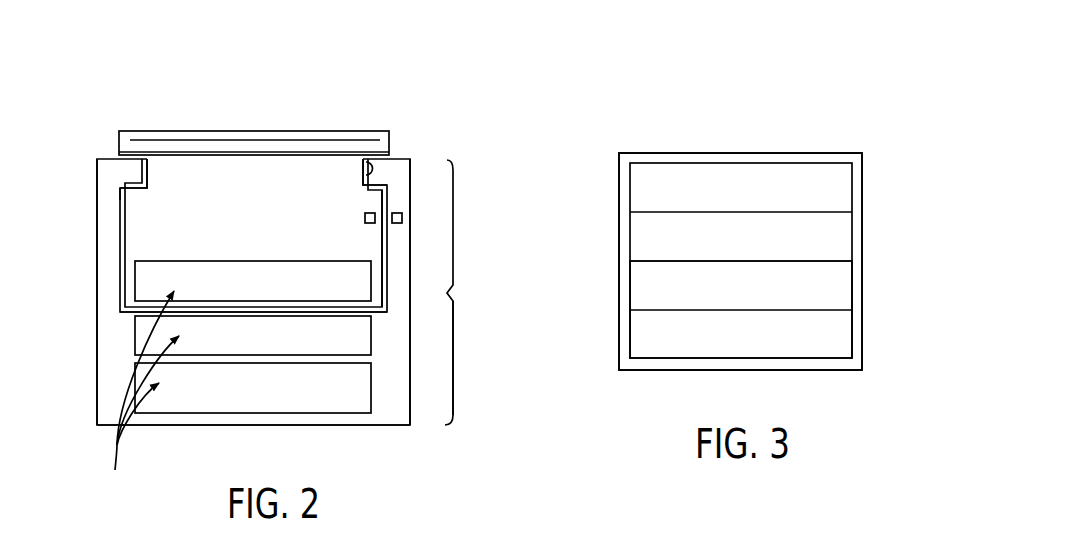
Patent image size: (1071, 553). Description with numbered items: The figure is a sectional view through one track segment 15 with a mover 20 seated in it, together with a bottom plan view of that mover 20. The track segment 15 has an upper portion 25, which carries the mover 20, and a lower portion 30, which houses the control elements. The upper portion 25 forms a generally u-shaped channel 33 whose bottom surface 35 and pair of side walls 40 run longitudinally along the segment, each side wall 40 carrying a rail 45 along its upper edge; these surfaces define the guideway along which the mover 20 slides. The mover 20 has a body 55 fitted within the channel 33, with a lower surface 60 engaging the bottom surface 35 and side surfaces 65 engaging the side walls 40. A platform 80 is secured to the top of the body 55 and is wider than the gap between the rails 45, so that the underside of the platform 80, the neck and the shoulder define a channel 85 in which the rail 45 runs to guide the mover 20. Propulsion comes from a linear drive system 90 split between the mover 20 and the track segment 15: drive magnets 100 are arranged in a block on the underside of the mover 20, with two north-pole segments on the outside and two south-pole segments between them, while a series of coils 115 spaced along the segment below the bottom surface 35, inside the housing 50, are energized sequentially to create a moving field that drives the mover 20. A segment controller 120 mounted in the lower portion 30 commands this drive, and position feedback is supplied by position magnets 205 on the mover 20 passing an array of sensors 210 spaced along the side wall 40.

In FIG. 2, the track segment 15 is at (94, 329).
In FIG. 2, the mover 20 is at (149, 127).
In FIG. 3, the mover 20 is at (652, 111).
In FIG. 2, the upper portion 25 is at (455, 223).
In FIG. 2, the lower portion 30 is at (457, 357).
In FIG. 2, the channel 33 is at (124, 194).
In FIG. 2, the bottom surface 35 is at (122, 313).
In FIG. 2, the side wall 40 is at (118, 238).
In FIG. 2, the rail 45 is at (122, 170).
In FIG. 2, the housing 50 is at (113, 395).
In FIG. 2, the body 55 is at (242, 172).
In FIG. 2, the lower surface 60 is at (380, 322).
In FIG. 3, the lower surface 60 is at (773, 160).
In FIG. 2, the side surfaces 65 is at (390, 272).
In FIG. 2, the platform 80 is at (356, 131).
In FIG. 2, the channel 85 is at (362, 148).
In FIG. 2, the linear drive system 90 is at (140, 397).
In FIG. 2, the drive magnets 100 is at (202, 275).
In FIG. 3, the drive magnets 100 is at (843, 237).
In FIG. 2, the coils 115 is at (253, 335).
In FIG. 2, the segment controller 120 is at (253, 388).
In FIG. 3, the segment controller 120 is at (842, 292).
In FIG. 2, the position magnets 205 is at (371, 212).
In FIG. 2, the sensors 210 is at (398, 212).